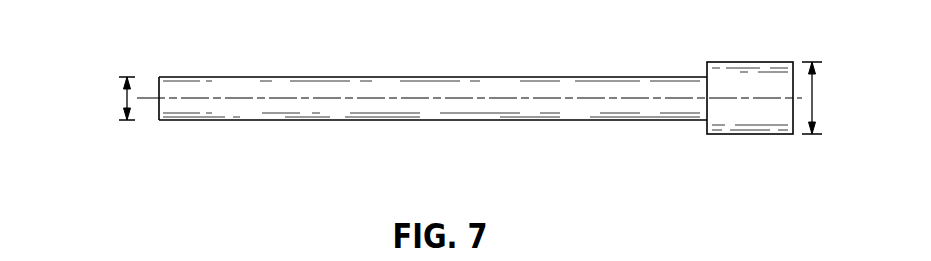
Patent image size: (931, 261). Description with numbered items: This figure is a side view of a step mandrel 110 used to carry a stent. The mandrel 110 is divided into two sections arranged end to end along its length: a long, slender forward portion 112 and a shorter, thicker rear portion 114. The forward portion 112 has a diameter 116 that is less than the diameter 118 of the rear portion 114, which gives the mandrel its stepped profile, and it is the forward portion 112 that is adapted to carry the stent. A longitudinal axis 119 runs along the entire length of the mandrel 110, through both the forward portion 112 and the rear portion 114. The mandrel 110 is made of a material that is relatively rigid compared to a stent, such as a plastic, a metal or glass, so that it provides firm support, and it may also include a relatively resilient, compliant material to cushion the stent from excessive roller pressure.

The step mandrel 110 is at (478, 29).
The forward portion 112 is at (705, 150).
The rear portion 114 is at (705, 150).
The diameter of forward portion 116 is at (123, 98).
The diameter of rear portion 118 is at (813, 87).
The longitudinal axis 119 is at (573, 97).